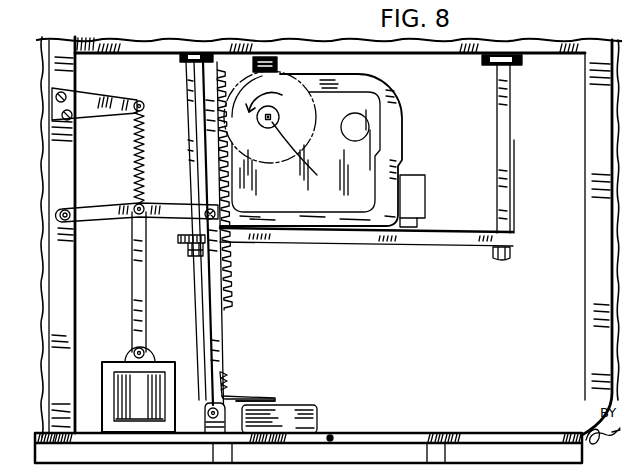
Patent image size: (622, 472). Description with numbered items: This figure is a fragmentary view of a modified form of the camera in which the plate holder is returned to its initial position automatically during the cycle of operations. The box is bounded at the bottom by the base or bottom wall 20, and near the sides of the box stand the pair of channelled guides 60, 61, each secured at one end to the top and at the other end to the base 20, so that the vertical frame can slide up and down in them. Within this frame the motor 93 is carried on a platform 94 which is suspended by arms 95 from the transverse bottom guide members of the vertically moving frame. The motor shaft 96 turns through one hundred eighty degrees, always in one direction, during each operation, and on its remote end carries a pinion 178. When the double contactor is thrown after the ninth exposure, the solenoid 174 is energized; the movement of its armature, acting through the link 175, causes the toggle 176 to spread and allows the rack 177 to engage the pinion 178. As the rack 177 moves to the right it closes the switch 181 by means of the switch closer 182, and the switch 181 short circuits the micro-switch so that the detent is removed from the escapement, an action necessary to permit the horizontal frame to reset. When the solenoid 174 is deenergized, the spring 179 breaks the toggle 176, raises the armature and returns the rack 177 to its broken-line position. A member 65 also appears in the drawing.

The bottom wall 20 is at (407, 436).
The channelled guide 60 is at (68, 284).
The channelled guide 61 is at (592, 265).
The top member 65 is at (217, 4).
The motor 93 is at (403, 136).
The platform 94 is at (366, 245).
The arms 95 is at (193, 127).
The motor shaft 96 is at (305, 154).
The solenoid 174 is at (126, 380).
The link 175 is at (147, 311).
The toggle 176 is at (112, 214).
The rack 177 is at (215, 86).
The pinion 178 is at (293, 100).
The spring 179 is at (132, 160).
The switch 181 is at (296, 404).
The switch closer 182 is at (254, 398).